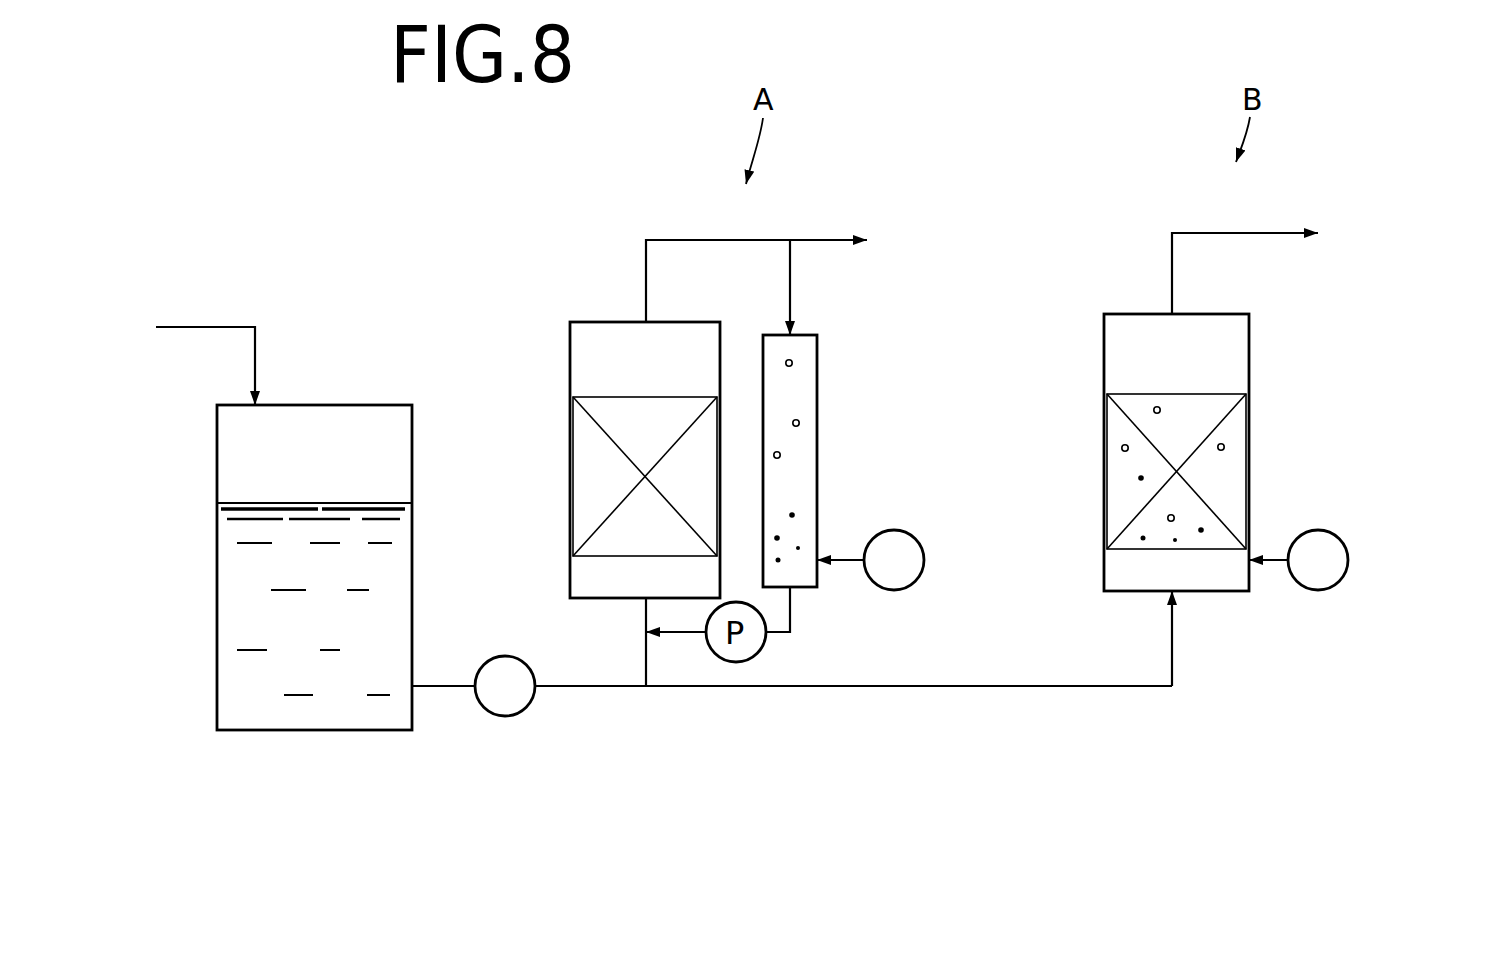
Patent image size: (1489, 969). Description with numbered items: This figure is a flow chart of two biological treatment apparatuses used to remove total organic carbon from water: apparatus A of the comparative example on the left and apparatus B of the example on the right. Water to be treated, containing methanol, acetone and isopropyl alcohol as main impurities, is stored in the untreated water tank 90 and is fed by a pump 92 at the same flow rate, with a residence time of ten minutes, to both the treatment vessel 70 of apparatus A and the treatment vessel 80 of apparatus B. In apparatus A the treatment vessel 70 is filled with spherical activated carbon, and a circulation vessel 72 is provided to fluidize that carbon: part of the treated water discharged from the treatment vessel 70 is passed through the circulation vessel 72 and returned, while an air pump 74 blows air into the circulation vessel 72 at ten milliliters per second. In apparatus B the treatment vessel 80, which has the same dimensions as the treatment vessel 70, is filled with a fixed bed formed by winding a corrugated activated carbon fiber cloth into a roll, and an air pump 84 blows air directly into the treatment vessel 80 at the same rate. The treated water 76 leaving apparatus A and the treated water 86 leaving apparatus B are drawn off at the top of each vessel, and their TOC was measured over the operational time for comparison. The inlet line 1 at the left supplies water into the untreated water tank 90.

The waste liquid inlet 1 is at (222, 327).
The treatment vessel 70 is at (570, 353).
The circulation vessel 72 is at (817, 390).
The air pump 74 is at (893, 530).
The treated water 76 is at (822, 238).
The treatment vessel 80 is at (1249, 425).
The air pump 84 is at (1318, 530).
The treated water 86 is at (1265, 232).
The untreated water tank 90 is at (413, 552).
The pump 92 is at (505, 656).